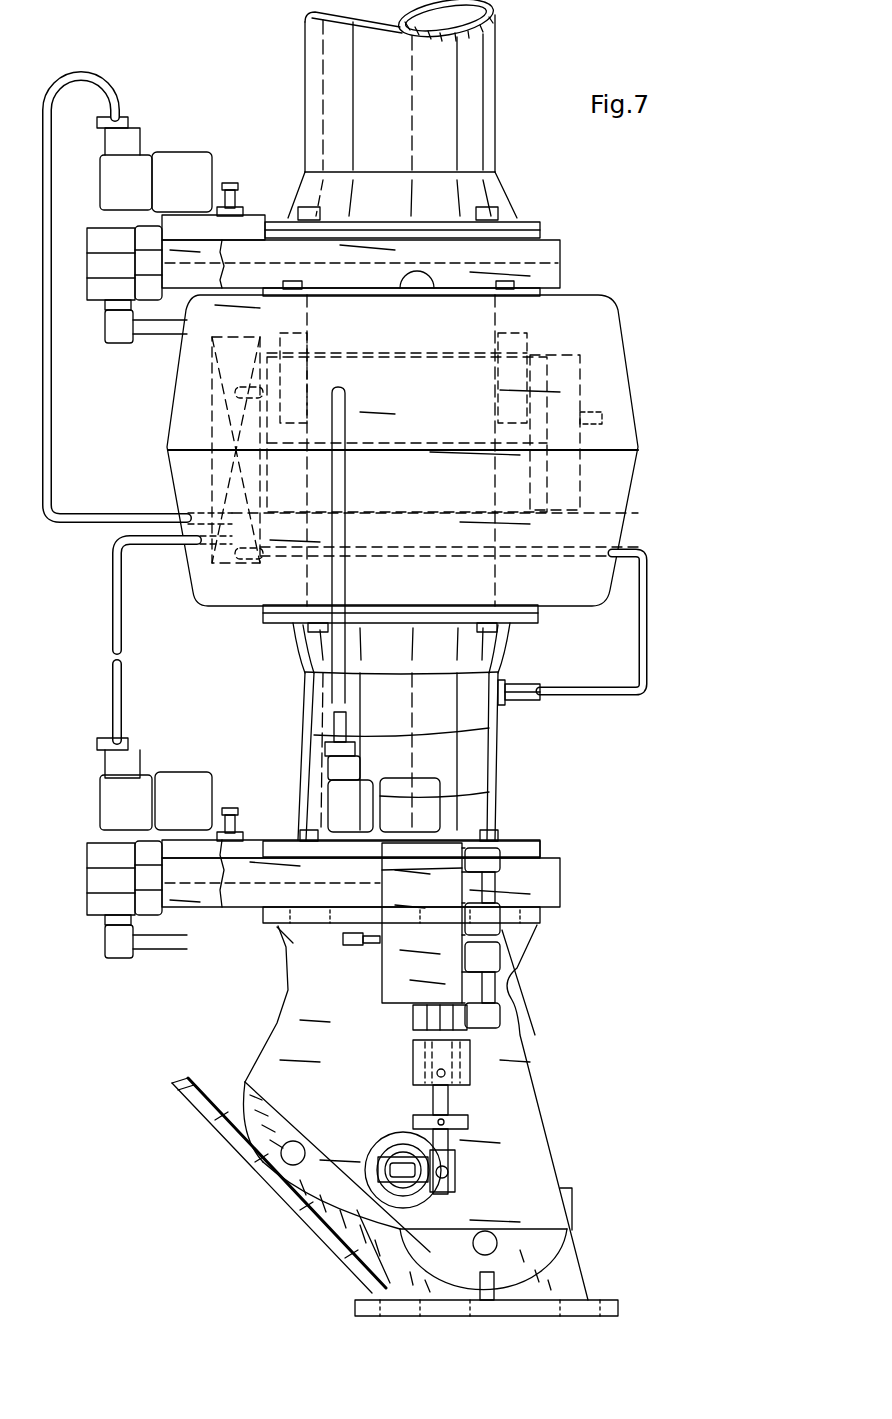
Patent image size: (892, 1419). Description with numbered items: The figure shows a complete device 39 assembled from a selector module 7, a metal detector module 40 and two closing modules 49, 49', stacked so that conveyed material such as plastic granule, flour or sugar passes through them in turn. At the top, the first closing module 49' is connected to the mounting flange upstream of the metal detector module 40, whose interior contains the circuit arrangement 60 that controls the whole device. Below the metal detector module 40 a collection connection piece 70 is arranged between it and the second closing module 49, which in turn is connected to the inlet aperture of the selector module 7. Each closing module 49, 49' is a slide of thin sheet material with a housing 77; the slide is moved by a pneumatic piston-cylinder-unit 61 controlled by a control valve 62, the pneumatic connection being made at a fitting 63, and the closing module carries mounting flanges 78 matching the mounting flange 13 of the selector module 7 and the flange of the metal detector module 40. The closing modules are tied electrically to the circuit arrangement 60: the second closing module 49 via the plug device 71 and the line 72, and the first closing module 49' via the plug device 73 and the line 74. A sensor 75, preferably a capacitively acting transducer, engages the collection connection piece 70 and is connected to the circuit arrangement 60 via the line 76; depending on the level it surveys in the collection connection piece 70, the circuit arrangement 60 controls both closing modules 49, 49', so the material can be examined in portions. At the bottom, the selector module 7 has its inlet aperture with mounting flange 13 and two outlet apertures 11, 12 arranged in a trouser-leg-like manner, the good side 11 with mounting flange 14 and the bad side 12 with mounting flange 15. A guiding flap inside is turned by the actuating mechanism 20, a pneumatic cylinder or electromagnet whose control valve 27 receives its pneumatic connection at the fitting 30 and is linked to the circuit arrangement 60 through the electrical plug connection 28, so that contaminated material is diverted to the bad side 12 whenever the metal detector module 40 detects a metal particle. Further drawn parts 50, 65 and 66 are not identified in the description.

The selector module 7 is at (525, 1096).
The outlet aperture 11 is at (482, 1320).
The outlet aperture 12 is at (258, 1198).
The mounting flange 13 is at (283, 947).
The mounting flange 14 is at (240, 1128).
The mounting flange 15 is at (430, 1305).
The actuating mechanism 20 is at (458, 1030).
The control valve 27 is at (450, 975).
The electrical plug connection 28 is at (338, 802).
The fitting 30 is at (362, 948).
The device 39 is at (688, 240).
The metal detector module 40 is at (617, 340).
The closing module 49 is at (396, 880).
The closing module 49' is at (405, 261).
The conduit 50 is at (505, 490).
The circuit arrangement 60 is at (218, 412).
The pneumatic piston-cylinder-unit 61 is at (115, 249).
The control valve 62 is at (185, 222).
The fitting 63 is at (236, 197).
The stop 65 is at (605, 414).
The inlet tube 66 is at (325, 52).
The collection connection piece 70 is at (478, 768).
The plug device 71 is at (181, 784).
The line 72 is at (122, 678).
The plug device 73 is at (178, 162).
The line 74 is at (53, 425).
The sensor 75 is at (515, 702).
The line 76 is at (492, 290).
The housing 77 is at (330, 655).
The mounting flanges 78 is at (394, 293).